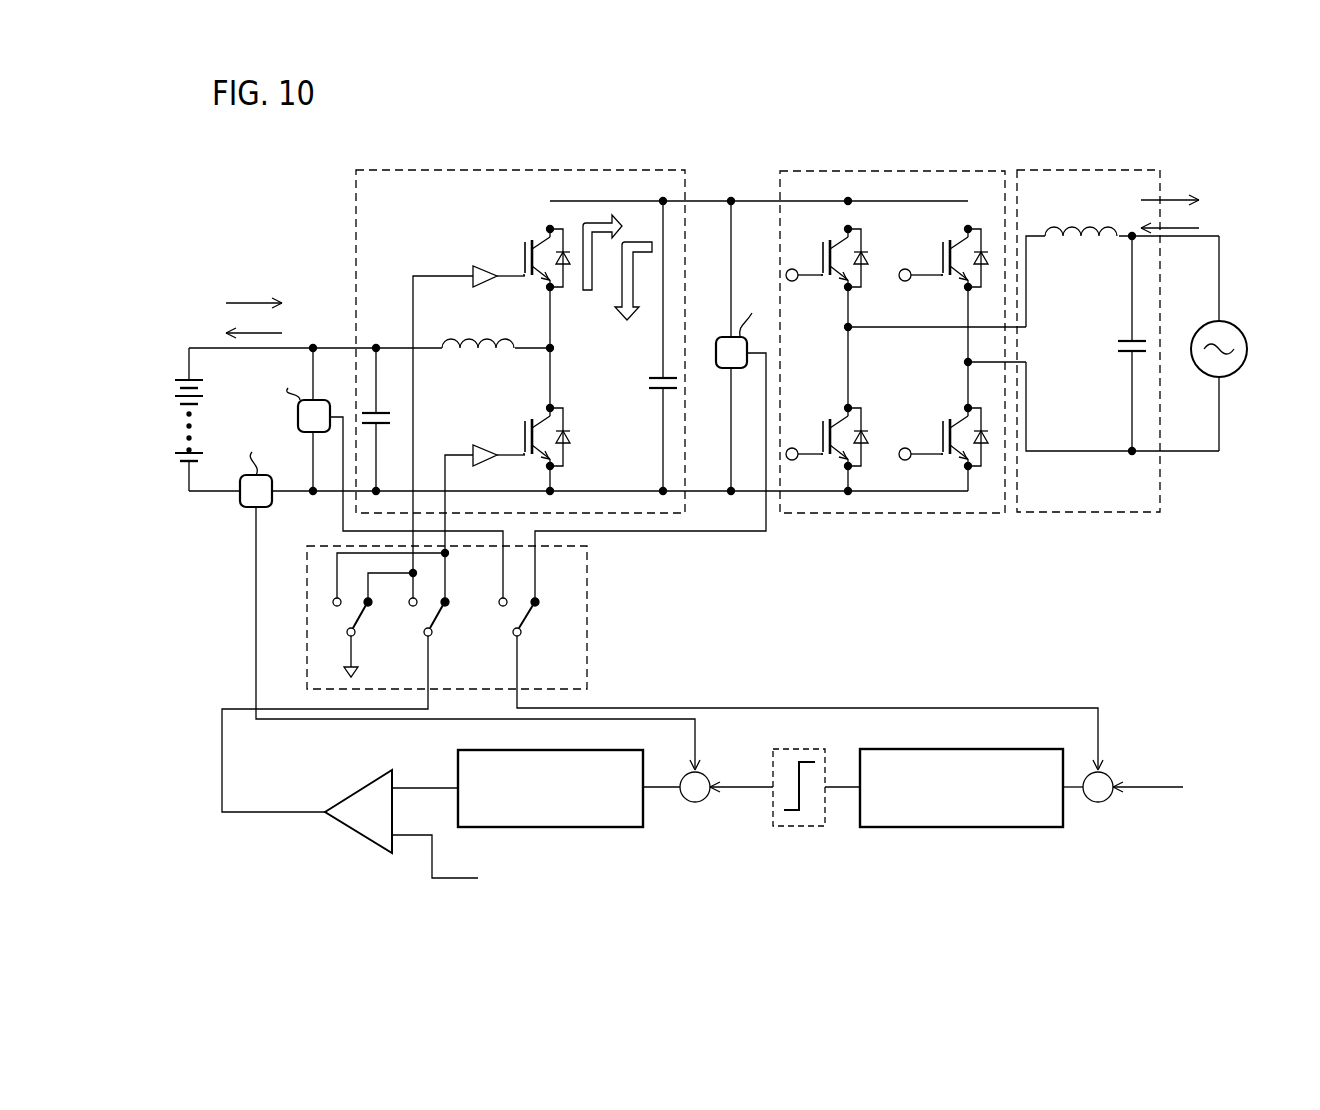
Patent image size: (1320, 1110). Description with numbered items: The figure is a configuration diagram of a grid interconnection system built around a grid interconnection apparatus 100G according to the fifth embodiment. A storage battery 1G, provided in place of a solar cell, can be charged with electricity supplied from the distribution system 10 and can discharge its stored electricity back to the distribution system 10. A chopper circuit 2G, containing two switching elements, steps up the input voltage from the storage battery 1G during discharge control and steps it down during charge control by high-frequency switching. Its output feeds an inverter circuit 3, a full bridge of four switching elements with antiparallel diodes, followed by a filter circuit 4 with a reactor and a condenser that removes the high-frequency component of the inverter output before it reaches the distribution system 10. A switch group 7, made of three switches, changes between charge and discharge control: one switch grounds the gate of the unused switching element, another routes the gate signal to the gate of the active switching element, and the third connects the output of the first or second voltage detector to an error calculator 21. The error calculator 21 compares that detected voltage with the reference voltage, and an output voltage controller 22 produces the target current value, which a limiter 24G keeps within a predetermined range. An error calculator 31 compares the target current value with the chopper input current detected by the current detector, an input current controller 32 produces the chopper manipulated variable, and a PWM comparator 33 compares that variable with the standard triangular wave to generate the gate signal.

The grid interconnection apparatus 100G is at (1278, 113).
The storage battery 1G is at (178, 428).
The chopper circuit 2G is at (534, 170).
The inverter circuit 3 is at (903, 171).
The filter circuit 4 is at (1097, 170).
The switch group 7 is at (588, 620).
The distribution system 10 is at (1247, 349).
The error calculator 21 is at (1103, 802).
The output voltage controller 22 is at (945, 749).
The limiter 24G is at (800, 830).
The error calculator 31 is at (700, 802).
The input current controller 32 is at (535, 827).
The PWM comparator 33 is at (350, 795).